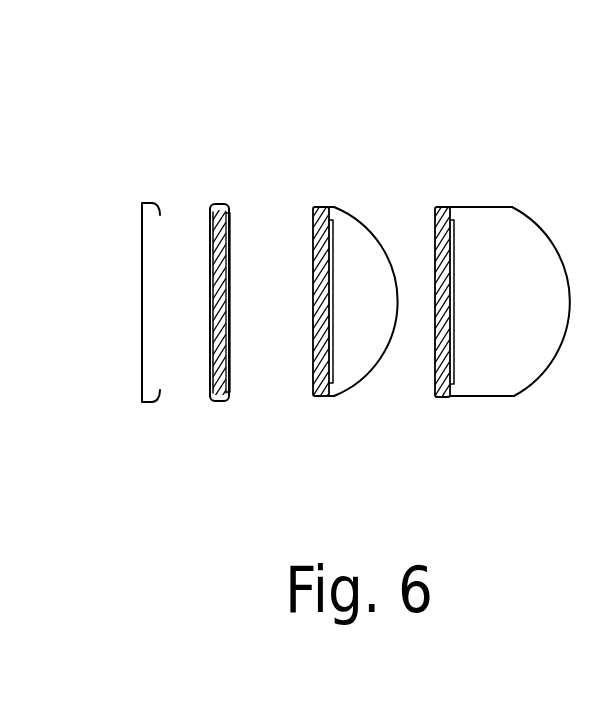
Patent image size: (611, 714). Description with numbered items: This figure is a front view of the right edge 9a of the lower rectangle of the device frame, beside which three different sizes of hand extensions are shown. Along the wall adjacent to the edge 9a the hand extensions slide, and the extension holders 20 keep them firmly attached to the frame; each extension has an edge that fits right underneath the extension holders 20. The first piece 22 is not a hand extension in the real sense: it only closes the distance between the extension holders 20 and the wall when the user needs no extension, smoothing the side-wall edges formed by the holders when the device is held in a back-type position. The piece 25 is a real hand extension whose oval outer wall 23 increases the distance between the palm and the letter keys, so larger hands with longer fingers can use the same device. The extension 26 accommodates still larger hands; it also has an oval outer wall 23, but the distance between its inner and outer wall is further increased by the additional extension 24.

The right edge of the lower rectangle of the frame 9a is at (140, 298).
The extension holders 20 is at (148, 205).
The filler hand extension 22 is at (230, 320).
The oval outer wall 23 is at (385, 245).
The additional extension 24 is at (483, 208).
The hand extension 25 is at (453, 294).
The hand extension 26 is at (516, 273).